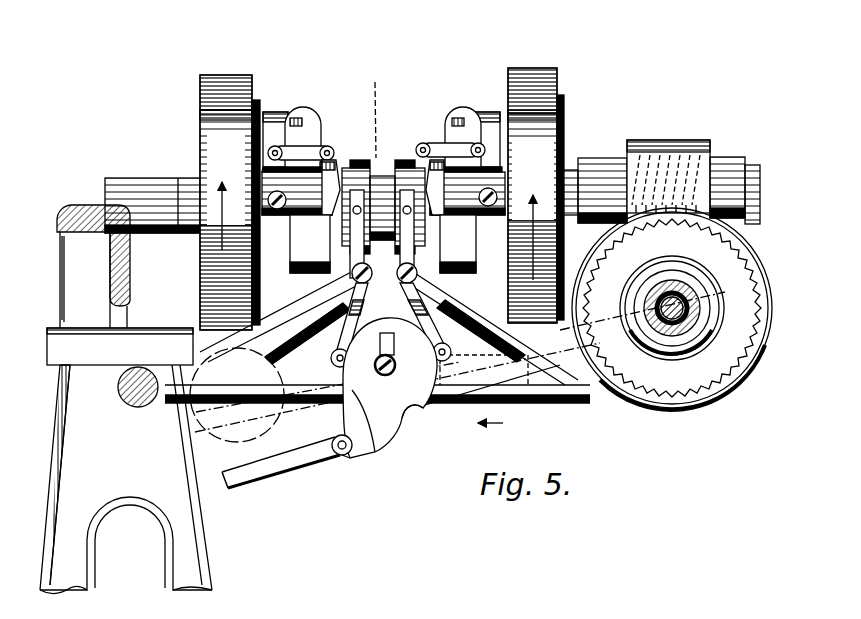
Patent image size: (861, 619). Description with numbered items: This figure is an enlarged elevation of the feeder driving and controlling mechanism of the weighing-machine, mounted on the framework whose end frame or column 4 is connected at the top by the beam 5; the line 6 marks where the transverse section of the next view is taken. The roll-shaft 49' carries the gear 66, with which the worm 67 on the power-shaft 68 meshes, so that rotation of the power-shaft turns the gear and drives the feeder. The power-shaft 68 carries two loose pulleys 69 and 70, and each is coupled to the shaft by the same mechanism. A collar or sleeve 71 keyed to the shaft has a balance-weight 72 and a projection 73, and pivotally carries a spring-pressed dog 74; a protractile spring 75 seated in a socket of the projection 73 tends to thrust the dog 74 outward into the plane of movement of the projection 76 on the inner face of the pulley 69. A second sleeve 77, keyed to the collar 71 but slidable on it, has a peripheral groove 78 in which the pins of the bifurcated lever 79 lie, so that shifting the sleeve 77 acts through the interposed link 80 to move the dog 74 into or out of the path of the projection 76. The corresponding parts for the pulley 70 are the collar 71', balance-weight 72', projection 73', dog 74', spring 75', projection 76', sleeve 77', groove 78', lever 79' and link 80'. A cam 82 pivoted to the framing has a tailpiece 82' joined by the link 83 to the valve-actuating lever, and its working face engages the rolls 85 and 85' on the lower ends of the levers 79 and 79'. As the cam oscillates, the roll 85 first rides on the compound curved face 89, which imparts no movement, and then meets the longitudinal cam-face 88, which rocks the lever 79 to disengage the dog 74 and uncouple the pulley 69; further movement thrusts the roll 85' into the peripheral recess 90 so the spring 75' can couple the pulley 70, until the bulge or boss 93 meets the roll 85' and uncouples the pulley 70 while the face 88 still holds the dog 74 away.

The end frame 4 is at (68, 432).
The beam 5 is at (67, 238).
The section line 6 is at (475, 444).
The roll-shaft 49' is at (680, 326).
The gear 66 is at (742, 272).
The worm 67 is at (668, 172).
The power-shaft 68 is at (758, 188).
The pulley 69 is at (232, 80).
The pulley 70 is at (532, 78).
The collar or sleeve 71 is at (297, 213).
The collar or sleeve 71' is at (467, 211).
The balance-weight 72 is at (299, 247).
The balance-weight 72' is at (473, 247).
The projection 73 is at (309, 124).
The projection 73' is at (451, 122).
The spring-pressed dog 74 is at (278, 119).
The spring-pressed dog 74' is at (482, 117).
The protractile spring 75 is at (296, 114).
The protractile spring 75' is at (467, 112).
The projection 76 is at (206, 106).
The projection 76' is at (550, 98).
The sleeve 77 is at (318, 204).
The sleeve 77' is at (447, 205).
The peripheral groove 78 is at (364, 203).
The peripheral groove 78' is at (409, 203).
The bifurcated lever 79 is at (325, 312).
The bifurcated lever 79' is at (447, 314).
The link 80 is at (308, 132).
The link 80' is at (444, 130).
The cam 82 is at (371, 388).
The tailpiece 82' is at (357, 434).
The link 83 is at (290, 462).
The roll 85 is at (321, 354).
The roll 85' is at (462, 350).
The longitudinal cam-face 88 is at (378, 330).
The compound curved face 89 is at (366, 358).
The peripheral recess 90 is at (420, 405).
The bulge or boss 93 is at (408, 412).